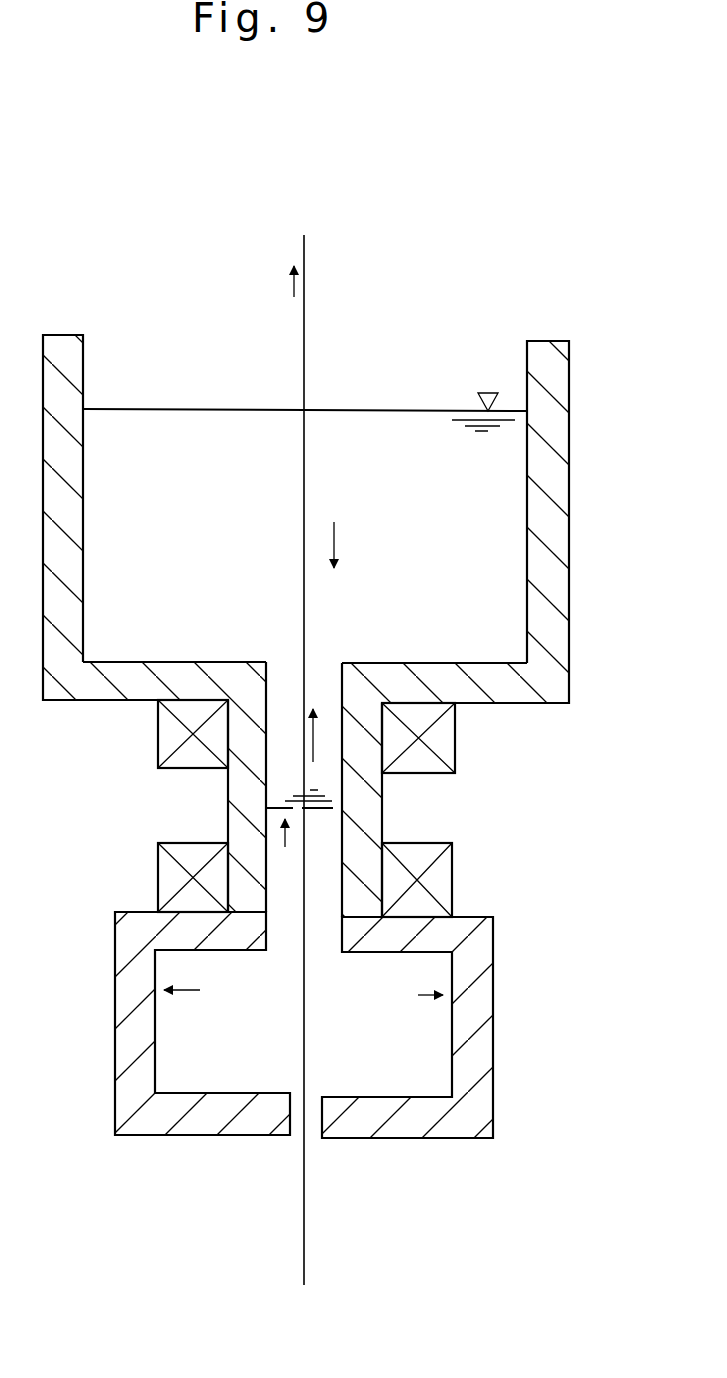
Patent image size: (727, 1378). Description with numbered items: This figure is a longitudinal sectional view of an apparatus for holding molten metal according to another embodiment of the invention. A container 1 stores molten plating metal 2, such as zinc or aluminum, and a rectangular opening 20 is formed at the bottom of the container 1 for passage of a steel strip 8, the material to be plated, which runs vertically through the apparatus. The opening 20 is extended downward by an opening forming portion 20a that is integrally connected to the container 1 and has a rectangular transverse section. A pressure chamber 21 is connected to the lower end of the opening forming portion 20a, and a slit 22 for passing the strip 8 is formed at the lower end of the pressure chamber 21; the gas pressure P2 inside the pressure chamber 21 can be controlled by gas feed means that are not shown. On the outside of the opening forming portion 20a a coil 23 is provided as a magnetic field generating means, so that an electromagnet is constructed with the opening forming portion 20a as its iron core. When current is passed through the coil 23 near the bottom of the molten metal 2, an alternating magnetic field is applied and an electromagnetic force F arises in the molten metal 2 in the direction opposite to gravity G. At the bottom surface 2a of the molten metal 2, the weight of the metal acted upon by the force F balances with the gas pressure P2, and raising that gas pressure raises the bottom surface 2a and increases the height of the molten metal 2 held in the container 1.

The container 1 is at (569, 410).
The molten plating metal 2 is at (392, 420).
The bottom surface of the molten metal 2a is at (386, 825).
The steel strip 8 is at (305, 258).
The rectangular opening 20 is at (337, 827).
The opening forming portion 20a is at (235, 803).
The pressure chamber 21 is at (493, 1000).
The slit 22 is at (313, 1143).
The coil 23 is at (455, 738).
The electromagnetic force F is at (315, 732).
The gravity G is at (354, 545).
The gas pressure P2 is at (303, 917).